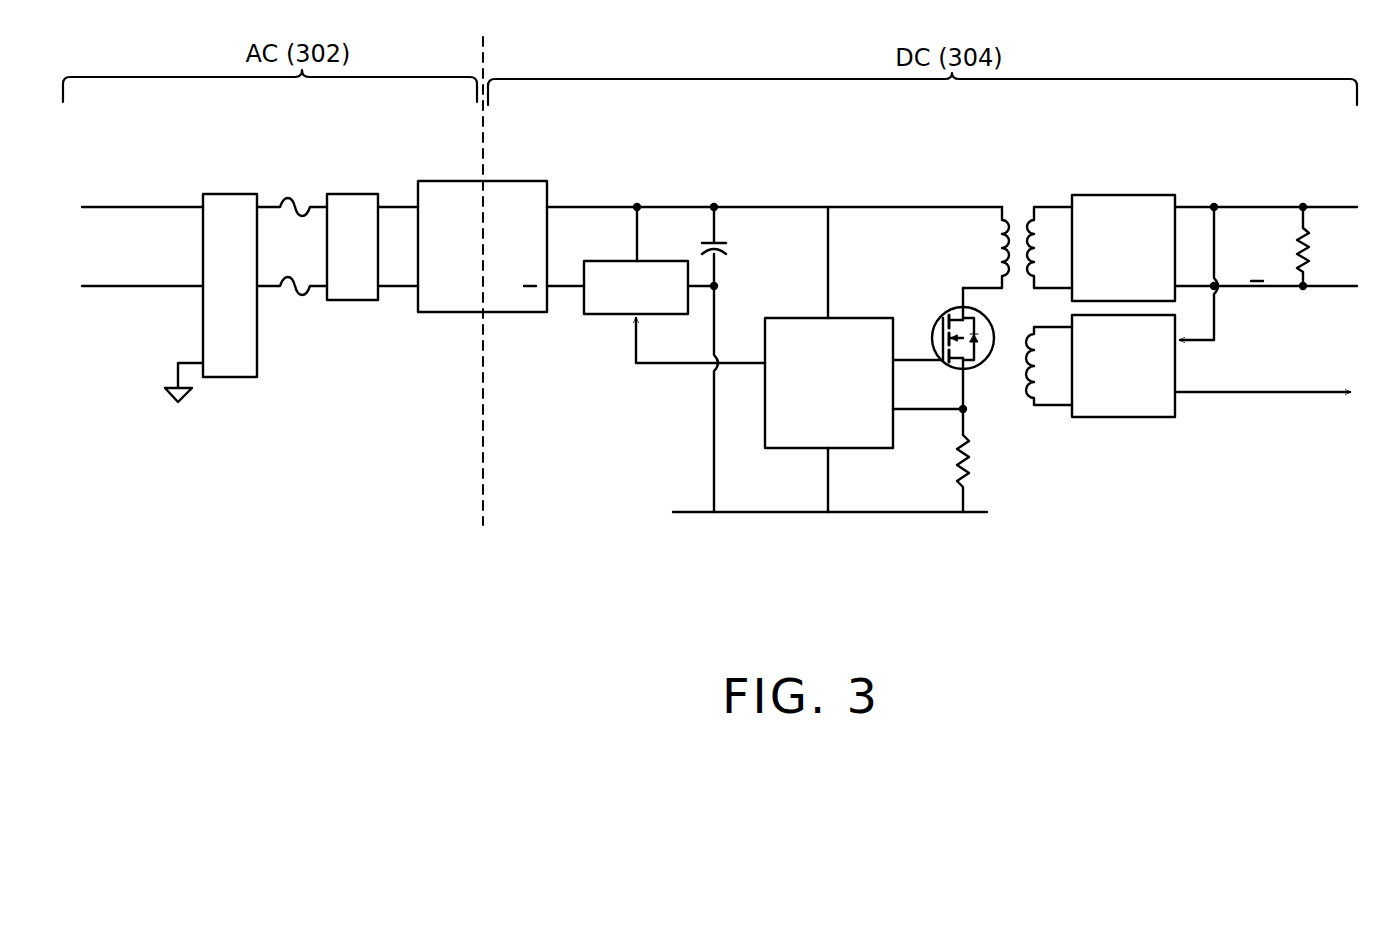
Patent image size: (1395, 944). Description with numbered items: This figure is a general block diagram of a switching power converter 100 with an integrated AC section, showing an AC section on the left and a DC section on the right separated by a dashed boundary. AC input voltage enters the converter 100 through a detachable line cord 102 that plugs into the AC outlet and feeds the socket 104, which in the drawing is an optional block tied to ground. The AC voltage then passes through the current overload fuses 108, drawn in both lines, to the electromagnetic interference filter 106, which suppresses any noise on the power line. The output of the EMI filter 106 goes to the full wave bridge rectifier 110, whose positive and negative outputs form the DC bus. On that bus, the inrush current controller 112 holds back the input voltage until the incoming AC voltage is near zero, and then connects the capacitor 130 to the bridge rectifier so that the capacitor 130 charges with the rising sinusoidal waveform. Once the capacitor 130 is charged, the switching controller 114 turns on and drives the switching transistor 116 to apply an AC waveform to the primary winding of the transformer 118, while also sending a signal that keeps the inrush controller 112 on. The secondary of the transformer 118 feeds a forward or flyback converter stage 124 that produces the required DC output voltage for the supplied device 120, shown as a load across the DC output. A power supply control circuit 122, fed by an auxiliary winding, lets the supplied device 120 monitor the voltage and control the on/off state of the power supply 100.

The power converter 100 is at (1134, 522).
The line cord 102 is at (135, 202).
The socket 104 is at (230, 188).
The electromagnetic interference filter 106 is at (350, 194).
The current overload fuses 108 is at (295, 192).
The full wave bridge rectifier 110 is at (512, 181).
The inrush current controller 112 is at (590, 330).
The switching controller 114 is at (865, 359).
The switching transistor 116 is at (973, 371).
The transformer 118 is at (1018, 205).
The supplied device 120 is at (1273, 246).
The power supply control circuit 122 is at (1121, 417).
The forward or flyback converter 124 is at (1121, 195).
The capacitor 130 is at (728, 249).